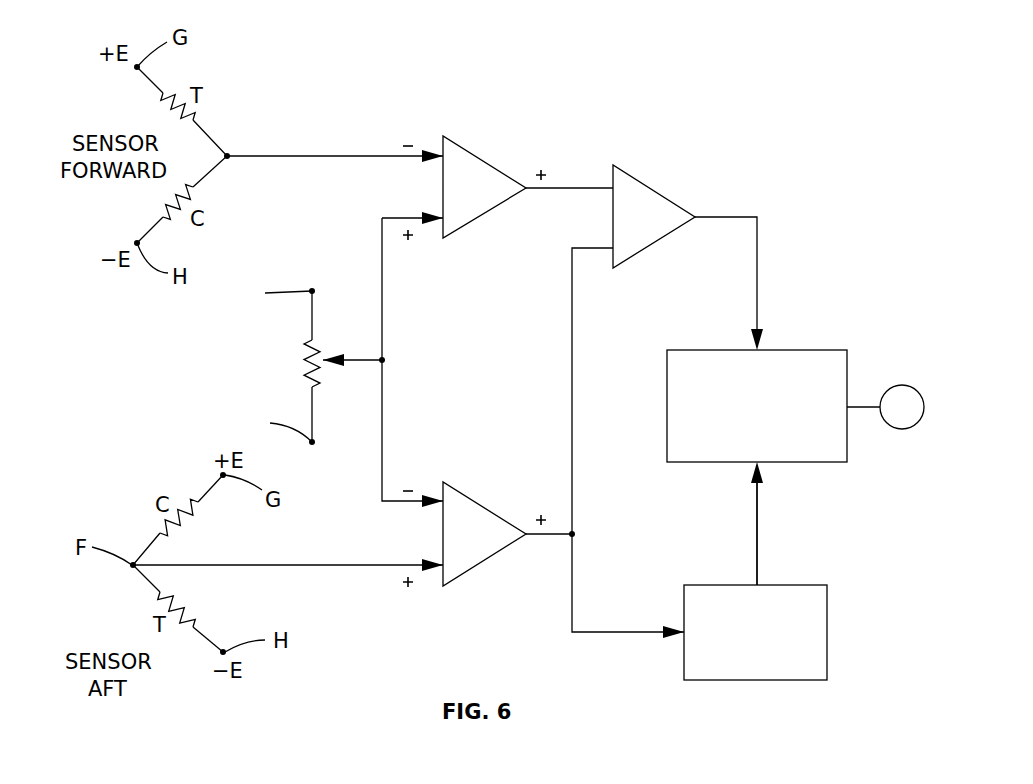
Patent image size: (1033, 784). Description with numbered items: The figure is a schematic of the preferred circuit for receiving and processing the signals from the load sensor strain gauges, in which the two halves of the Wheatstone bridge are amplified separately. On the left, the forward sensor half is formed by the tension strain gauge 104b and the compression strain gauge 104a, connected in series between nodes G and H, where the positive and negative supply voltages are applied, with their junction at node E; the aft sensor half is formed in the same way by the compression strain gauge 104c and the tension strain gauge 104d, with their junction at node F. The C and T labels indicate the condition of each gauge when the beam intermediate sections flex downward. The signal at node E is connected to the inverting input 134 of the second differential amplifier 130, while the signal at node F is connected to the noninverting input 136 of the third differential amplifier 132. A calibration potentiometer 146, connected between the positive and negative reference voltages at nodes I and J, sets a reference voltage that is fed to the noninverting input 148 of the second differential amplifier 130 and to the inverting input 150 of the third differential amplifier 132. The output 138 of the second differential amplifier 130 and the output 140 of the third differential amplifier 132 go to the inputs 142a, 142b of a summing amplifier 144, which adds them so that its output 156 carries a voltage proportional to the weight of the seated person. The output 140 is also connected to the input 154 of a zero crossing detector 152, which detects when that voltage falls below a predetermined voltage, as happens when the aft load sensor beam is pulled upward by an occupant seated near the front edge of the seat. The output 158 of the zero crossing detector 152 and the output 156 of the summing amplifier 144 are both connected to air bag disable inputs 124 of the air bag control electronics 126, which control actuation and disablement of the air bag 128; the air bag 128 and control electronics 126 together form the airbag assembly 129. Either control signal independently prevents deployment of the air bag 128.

The strain gauge 104a is at (198, 198).
The strain gauge 104b is at (198, 118).
The strain gauge 104c is at (175, 528).
The strain gauge 104d is at (177, 603).
The air bag disable input 124 is at (762, 348).
The air bag control electronics 126 is at (848, 452).
The air bag 128 is at (902, 385).
The airbag assembly 129 is at (842, 328).
The second differential amplifier 130 is at (473, 156).
The third differential amplifier 132 is at (470, 570).
The inverting input 134 is at (442, 156).
The noninverting input 136 is at (442, 568).
The output 138 is at (523, 190).
The output 140 is at (523, 530).
The input 142a is at (613, 185).
The input 142b is at (607, 257).
The summing amplifier 144 is at (650, 185).
The calibration potentiometer 146 is at (308, 362).
The noninverting input 148 is at (442, 222).
The inverting input 150 is at (442, 498).
The zero crossing detector 152 is at (827, 655).
The input 154 is at (684, 637).
The output 156 is at (693, 218).
The output 158 is at (755, 582).